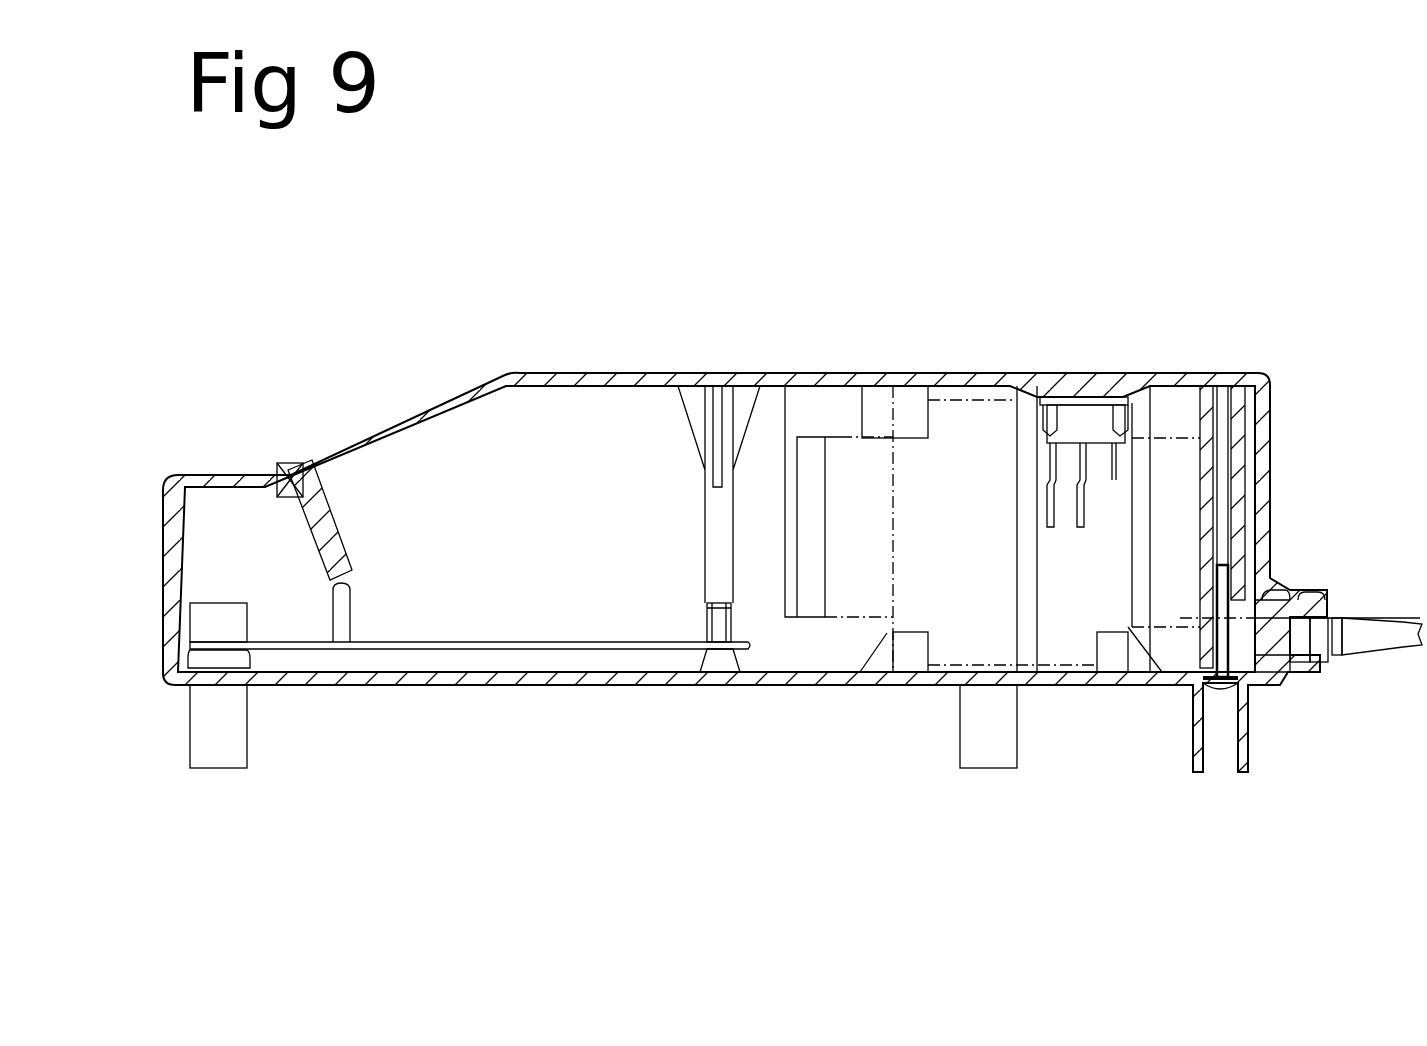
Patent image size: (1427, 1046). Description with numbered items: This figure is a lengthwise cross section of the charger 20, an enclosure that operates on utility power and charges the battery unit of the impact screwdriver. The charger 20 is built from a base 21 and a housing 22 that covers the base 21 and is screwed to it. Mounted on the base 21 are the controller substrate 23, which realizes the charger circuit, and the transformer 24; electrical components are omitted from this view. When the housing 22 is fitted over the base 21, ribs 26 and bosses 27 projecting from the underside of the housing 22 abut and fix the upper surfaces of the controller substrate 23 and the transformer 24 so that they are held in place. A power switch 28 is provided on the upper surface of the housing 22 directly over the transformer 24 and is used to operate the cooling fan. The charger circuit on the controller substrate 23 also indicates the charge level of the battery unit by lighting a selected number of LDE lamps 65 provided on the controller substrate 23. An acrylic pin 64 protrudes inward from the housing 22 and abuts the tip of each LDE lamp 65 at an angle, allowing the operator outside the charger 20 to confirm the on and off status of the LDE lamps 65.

The charger 20 is at (722, 318).
The base 21 is at (1100, 685).
The housing 22 is at (1208, 390).
The controller substrate 23 is at (560, 649).
The transformer 24 is at (950, 625).
The ribs 26 is at (873, 388).
The bosses 27 is at (713, 553).
The power switch 28 is at (1088, 390).
The acrylic pin 64 is at (330, 500).
The LDE lamps 65 is at (345, 618).